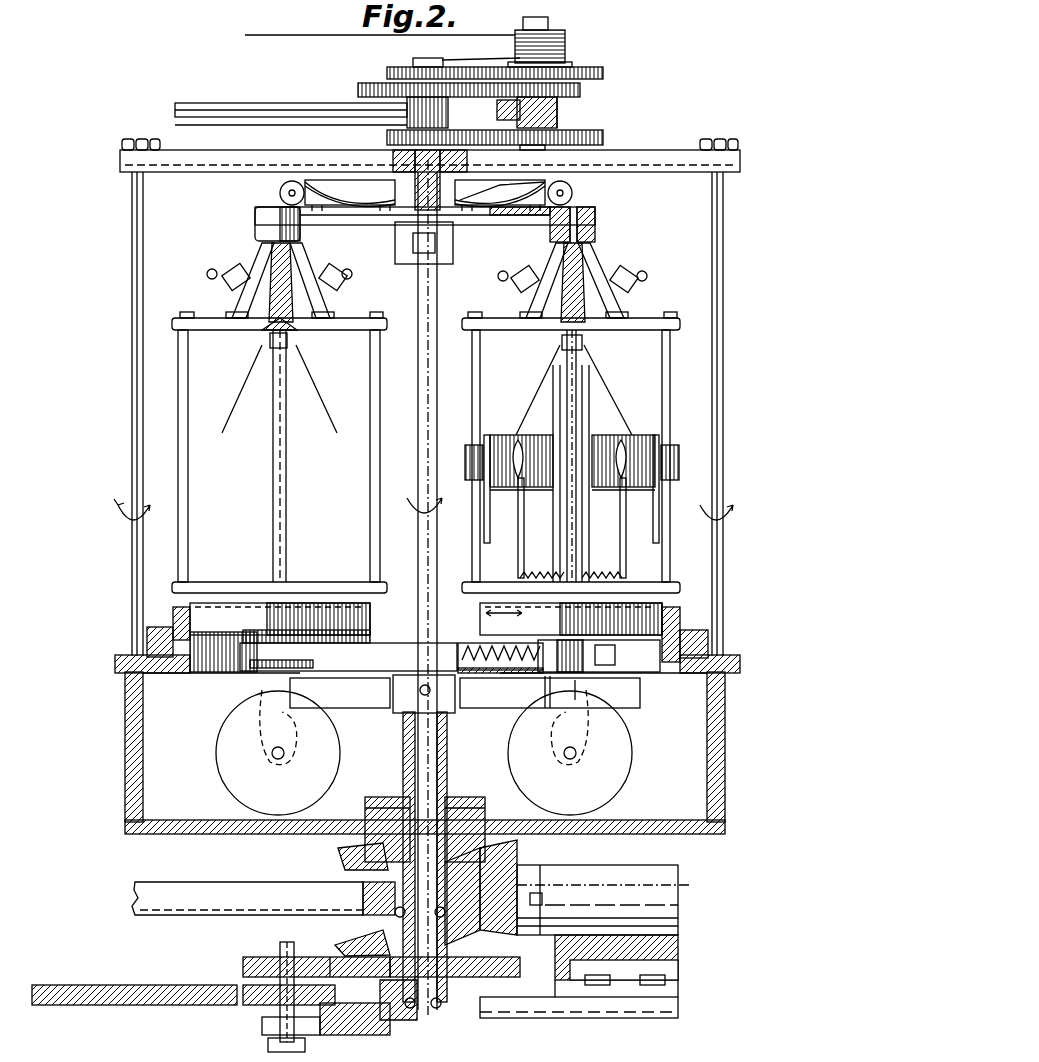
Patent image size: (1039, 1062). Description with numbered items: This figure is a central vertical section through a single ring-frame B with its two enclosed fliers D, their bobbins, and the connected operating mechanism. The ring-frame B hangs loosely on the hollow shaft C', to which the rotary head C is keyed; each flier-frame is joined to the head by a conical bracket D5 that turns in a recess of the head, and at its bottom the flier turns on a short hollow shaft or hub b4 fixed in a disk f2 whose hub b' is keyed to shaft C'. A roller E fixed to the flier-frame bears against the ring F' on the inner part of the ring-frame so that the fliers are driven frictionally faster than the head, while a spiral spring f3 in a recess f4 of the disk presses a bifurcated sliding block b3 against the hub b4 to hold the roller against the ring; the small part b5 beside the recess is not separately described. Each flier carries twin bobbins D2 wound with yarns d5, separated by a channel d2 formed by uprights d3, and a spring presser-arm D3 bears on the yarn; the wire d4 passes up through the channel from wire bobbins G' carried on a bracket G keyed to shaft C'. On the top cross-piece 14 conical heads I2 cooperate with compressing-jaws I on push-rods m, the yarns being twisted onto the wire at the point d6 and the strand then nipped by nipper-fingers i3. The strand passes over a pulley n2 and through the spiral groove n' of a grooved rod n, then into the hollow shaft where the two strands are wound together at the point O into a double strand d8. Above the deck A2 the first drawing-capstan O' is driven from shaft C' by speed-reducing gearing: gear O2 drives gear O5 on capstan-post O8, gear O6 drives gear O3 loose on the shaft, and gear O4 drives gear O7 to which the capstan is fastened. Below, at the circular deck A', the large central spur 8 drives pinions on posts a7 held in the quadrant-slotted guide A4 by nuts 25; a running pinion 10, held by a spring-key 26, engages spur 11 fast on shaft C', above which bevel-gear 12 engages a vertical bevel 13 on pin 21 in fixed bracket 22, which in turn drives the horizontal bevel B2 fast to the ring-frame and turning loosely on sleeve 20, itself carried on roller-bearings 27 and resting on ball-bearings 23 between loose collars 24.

The first drawing-capstan O' is at (552, 42).
The spur gear O7 is at (603, 73).
The spur gear O6 is at (582, 91).
The capstan-post O8 is at (557, 115).
The spur gear O4 is at (413, 64).
The spur gear O3 is at (358, 90).
The spur gear O2 is at (387, 137).
The spur gear O5 is at (603, 137).
The winding point O is at (411, 180).
The double strand d8 is at (470, 60).
The upper deck A2 is at (286, 100).
The grooved rod n is at (453, 157).
The spiral groove n' is at (554, 151).
The pulley n2 is at (280, 193).
The rotary head C is at (430, 203).
The disk f2 is at (262, 227).
The shaft C' is at (436, 587).
The conical bracket D5 is at (262, 262).
The twisting point d6 is at (270, 252).
The nipper-fingers i3 is at (224, 279).
The push-rod m is at (210, 279).
The top cross-piece 14 is at (362, 326).
The flier D is at (380, 452).
The roller E is at (372, 596).
The wire d4 is at (288, 450).
The channel d2 is at (288, 485).
The uprights d3 is at (288, 352).
The yarns d5 is at (238, 372).
The compressing-jaws I is at (258, 334).
The conical heads I2 is at (556, 362).
The twin bobbins D2 is at (530, 434).
The spring presser-arm D3 is at (520, 562).
The bearing F' is at (450, 629).
The recess f4 is at (470, 650).
The block b5 is at (614, 655).
The bracket G is at (427, 744).
The spiral spring f3 is at (520, 688).
The bifurcated sliding block b3 is at (546, 679).
The hub b' is at (435, 706).
The wire bobbins G' is at (427, 752).
The short hollow shaft b4 is at (574, 692).
The roller-bearings 27 is at (399, 798).
The sleeve 20 is at (476, 812).
The vertical bevel gear 13 is at (514, 862).
The fixed bracket 22 is at (680, 905).
The pin 21 is at (601, 959).
The spur gear 11 is at (514, 968).
The quadrant-slotted guide-plate A4 is at (536, 1022).
The circular deck A' is at (247, 885).
The horizontal bevel-gear B2 is at (338, 856).
The loose collars 24 is at (363, 900).
The ball-bearings 23 is at (395, 915).
The bevel-gear 12 is at (356, 950).
The running pinion 10 is at (243, 966).
The central spur gear 8 is at (146, 990).
The post a7 is at (280, 1000).
The spring-key 26 is at (288, 942).
The nut 25 is at (268, 1046).
The ring-frame B is at (724, 530).